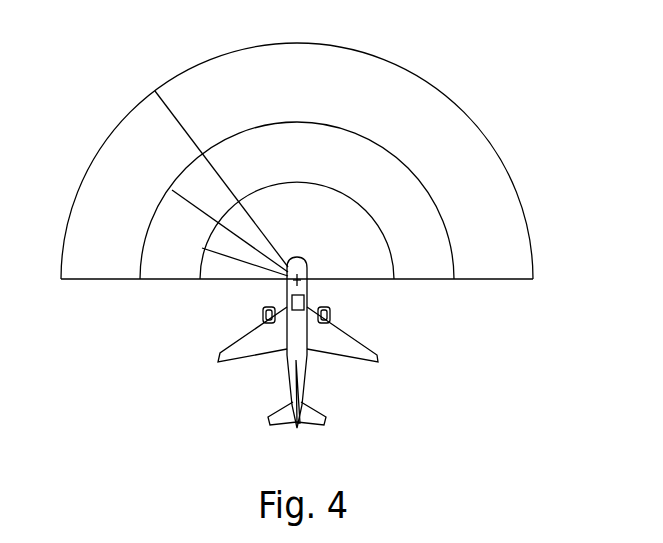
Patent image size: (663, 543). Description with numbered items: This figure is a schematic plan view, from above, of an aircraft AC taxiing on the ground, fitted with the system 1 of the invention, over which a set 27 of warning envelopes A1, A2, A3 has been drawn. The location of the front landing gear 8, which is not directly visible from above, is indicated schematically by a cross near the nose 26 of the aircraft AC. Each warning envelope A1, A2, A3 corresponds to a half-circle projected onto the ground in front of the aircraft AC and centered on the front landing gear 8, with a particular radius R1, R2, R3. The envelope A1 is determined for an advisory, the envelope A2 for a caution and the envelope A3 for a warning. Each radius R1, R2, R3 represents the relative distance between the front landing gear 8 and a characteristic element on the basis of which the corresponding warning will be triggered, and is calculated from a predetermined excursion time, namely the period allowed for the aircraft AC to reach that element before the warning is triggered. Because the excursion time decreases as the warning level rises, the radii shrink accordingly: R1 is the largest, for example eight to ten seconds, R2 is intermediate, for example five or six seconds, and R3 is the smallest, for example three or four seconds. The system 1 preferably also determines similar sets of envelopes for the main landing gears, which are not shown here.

The set of warning envelopes 27 is at (346, 175).
The warning envelope A1 is at (503, 160).
The warning envelope A2 is at (450, 241).
The warning envelope A3 is at (392, 262).
The radius R1 is at (180, 125).
The radius R2 is at (188, 203).
The radius R3 is at (226, 257).
The aircraft AC is at (327, 342).
The system 1 is at (258, 332).
The front landing gear 8 is at (307, 280).
The nose 26 is at (314, 260).